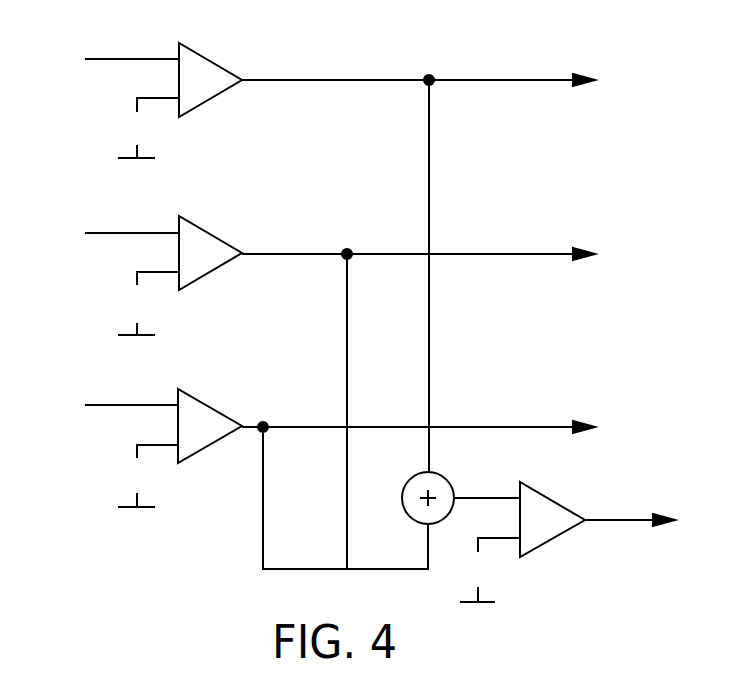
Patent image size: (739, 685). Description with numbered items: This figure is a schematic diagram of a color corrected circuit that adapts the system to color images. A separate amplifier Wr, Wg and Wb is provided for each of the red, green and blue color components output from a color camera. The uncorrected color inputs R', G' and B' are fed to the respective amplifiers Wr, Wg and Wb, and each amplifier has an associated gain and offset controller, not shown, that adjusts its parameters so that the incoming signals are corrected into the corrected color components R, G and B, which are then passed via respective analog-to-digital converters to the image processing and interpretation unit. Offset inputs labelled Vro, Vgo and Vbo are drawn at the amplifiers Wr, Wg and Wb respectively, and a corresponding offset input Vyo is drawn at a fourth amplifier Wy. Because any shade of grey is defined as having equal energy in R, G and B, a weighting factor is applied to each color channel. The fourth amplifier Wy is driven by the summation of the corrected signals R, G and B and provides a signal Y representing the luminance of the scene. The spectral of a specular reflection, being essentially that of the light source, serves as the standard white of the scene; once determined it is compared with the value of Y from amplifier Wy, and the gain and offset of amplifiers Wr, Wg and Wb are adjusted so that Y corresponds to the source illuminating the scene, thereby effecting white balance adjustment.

The uncorrected red color input R' is at (115, 63).
The uncorrected green color input G' is at (115, 235).
The uncorrected blue color input B' is at (114, 407).
The red amplifier Wr is at (210, 80).
The green amplifier Wg is at (210, 253).
The blue amplifier Wb is at (210, 426).
The fourth amplifier Wy is at (552, 519).
The red offset voltage Vro is at (148, 128).
The green offset voltage Vgo is at (148, 303).
The blue offset voltage Vbo is at (145, 476).
The luminance offset voltage Vyo is at (486, 570).
The corrected red color component R is at (430, 86).
The corrected green color component G is at (430, 261).
The corrected blue color component B is at (429, 434).
The luminance signal Y is at (639, 525).